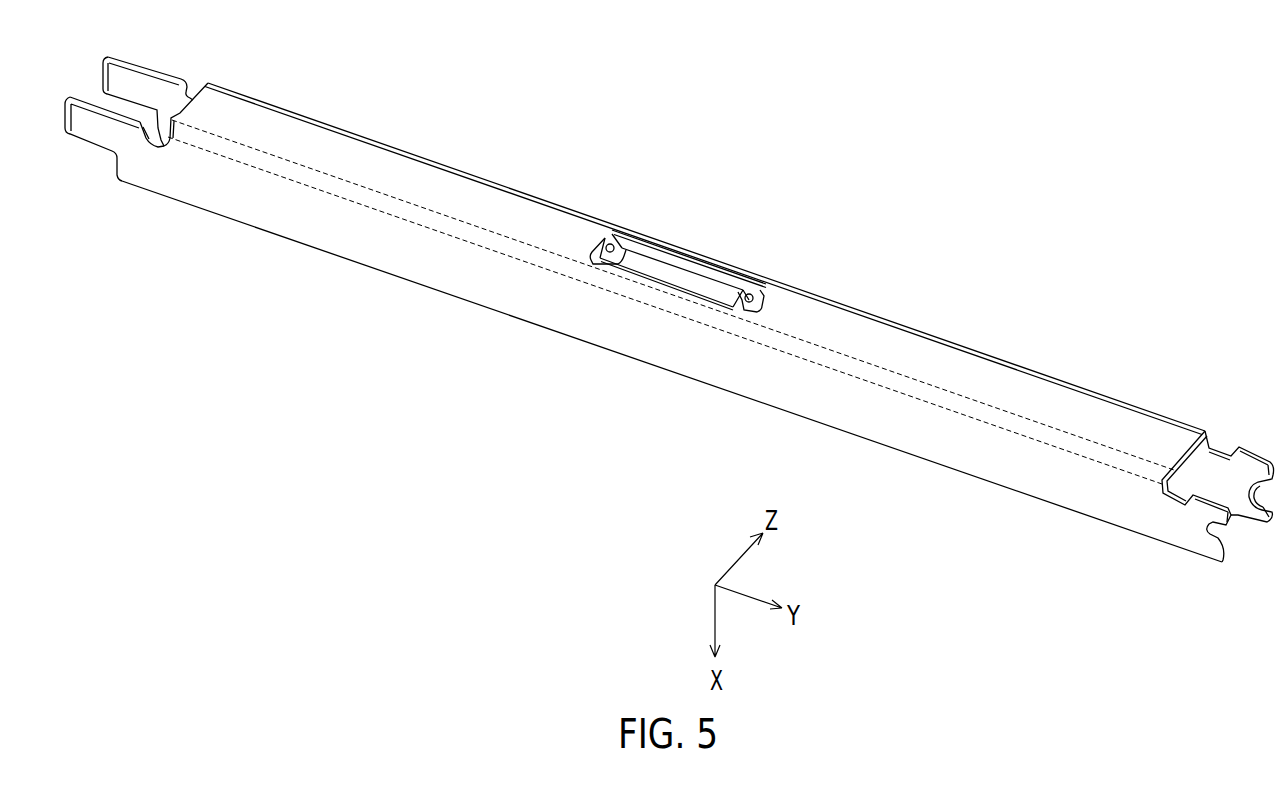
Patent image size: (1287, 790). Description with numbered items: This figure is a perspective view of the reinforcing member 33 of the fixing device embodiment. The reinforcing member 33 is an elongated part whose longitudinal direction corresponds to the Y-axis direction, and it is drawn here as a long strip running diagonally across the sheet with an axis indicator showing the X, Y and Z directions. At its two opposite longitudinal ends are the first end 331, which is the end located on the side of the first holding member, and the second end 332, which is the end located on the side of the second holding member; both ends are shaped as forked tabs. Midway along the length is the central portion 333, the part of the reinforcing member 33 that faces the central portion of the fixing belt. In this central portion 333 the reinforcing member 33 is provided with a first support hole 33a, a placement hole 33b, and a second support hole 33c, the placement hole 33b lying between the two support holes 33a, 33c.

The reinforcing member 33 is at (903, 192).
The first end 331 is at (207, 83).
The second end 332 is at (1203, 429).
The central portion 333 is at (713, 305).
The first support hole 33a is at (613, 243).
The placement hole 33b is at (667, 277).
The second support hole 33c is at (757, 292).